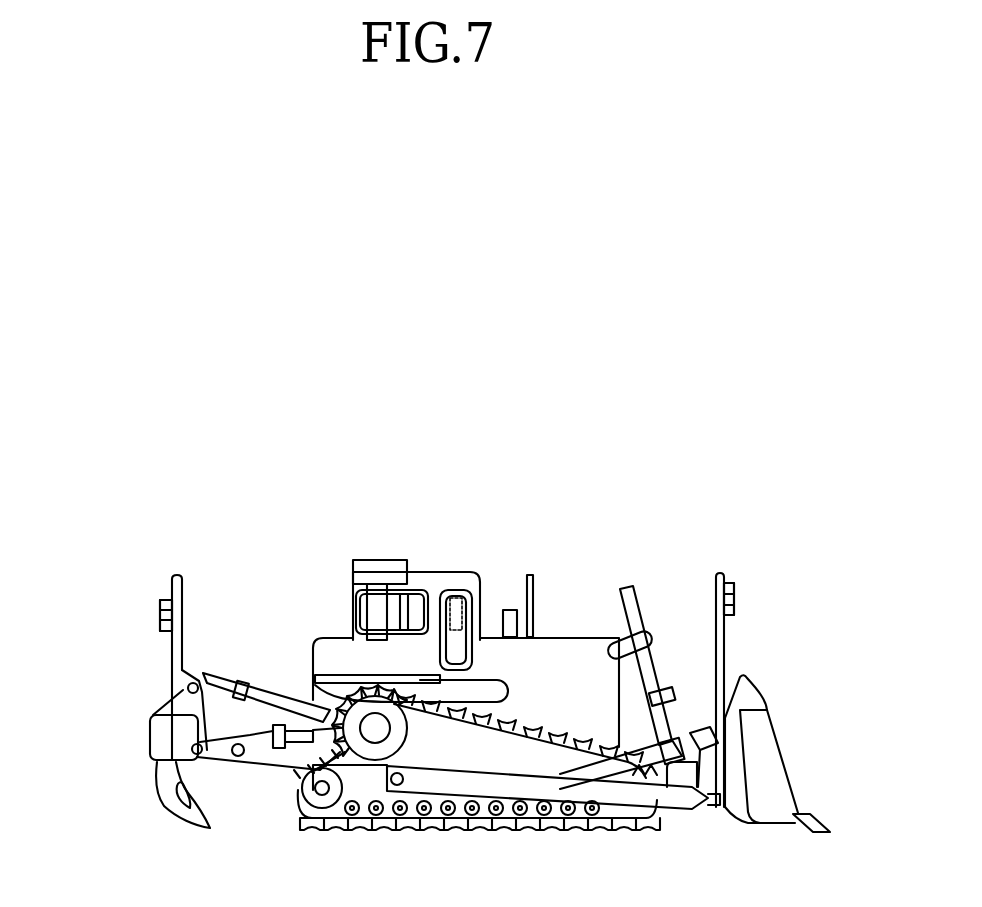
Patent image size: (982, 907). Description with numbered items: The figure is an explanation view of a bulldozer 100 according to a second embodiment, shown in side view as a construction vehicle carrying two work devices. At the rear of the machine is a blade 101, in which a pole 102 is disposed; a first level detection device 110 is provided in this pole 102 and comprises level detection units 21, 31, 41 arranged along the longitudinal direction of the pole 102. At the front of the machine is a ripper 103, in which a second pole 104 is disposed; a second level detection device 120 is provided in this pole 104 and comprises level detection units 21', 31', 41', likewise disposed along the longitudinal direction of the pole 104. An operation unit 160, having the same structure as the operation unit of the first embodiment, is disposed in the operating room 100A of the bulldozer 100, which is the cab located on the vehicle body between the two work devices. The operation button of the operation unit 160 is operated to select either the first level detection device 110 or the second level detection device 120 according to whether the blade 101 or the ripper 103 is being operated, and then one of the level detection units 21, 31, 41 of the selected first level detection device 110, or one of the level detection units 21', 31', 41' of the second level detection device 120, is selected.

The bulldozer 100 is at (556, 540).
The operating room 100A is at (433, 583).
The blade 101 is at (775, 809).
The pole 102 is at (735, 655).
The ripper 103 is at (165, 810).
The pole 104 is at (182, 620).
The first level detection device 110 is at (729, 585).
The second level detection device 120 is at (162, 600).
The operation unit 160 is at (465, 580).
The level detection unit 21 is at (764, 563).
The level detection unit 31 is at (764, 588).
The level detection unit 41 is at (764, 624).
The level detection unit 21' is at (112, 595).
The level detection unit 31' is at (112, 631).
The level detection unit 41' is at (112, 657).